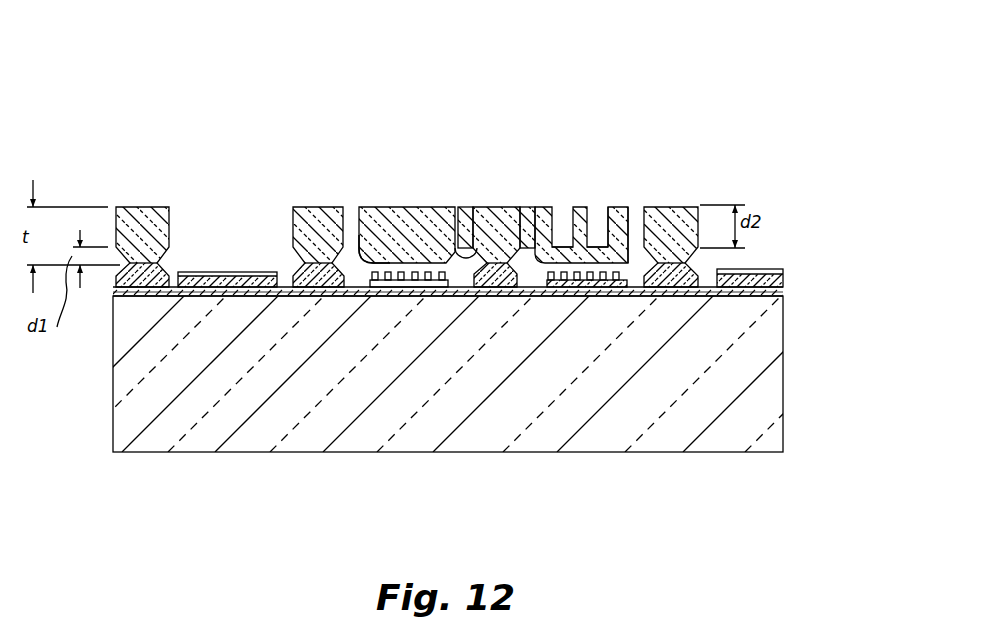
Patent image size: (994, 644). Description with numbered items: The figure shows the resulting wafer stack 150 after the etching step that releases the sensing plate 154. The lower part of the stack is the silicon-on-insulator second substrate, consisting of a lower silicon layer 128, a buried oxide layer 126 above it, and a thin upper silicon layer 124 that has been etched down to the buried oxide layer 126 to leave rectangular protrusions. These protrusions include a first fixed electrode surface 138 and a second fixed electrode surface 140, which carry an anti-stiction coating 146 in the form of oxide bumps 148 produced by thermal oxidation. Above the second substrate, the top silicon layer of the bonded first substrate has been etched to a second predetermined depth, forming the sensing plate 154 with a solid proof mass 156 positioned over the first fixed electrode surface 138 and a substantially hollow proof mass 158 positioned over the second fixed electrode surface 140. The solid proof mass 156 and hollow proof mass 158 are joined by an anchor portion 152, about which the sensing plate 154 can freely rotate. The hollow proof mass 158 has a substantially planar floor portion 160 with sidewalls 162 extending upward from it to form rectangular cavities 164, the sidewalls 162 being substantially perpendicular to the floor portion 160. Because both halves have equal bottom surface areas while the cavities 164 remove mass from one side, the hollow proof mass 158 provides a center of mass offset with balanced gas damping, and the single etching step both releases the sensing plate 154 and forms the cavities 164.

The wafer stack 150 is at (152, 128).
The bumps 148 is at (356, 207).
The anchor portion 152 is at (446, 207).
The solid proof mass 156 is at (363, 211).
The sensing plate 154 is at (496, 163).
The sidewalls 162 is at (554, 207).
The substantially hollow proof mass 158 is at (582, 207).
The cavities 164 is at (564, 207).
The floor portion 160 is at (608, 207).
The first fixed electrode surface 138 is at (377, 290).
The second fixed electrode surface 140 is at (598, 288).
The anti-stiction coating 146 is at (783, 272).
The upper silicon layer 124 is at (785, 288).
The buried oxide layer 126 is at (784, 297).
The lower silicon layer 128 is at (784, 398).